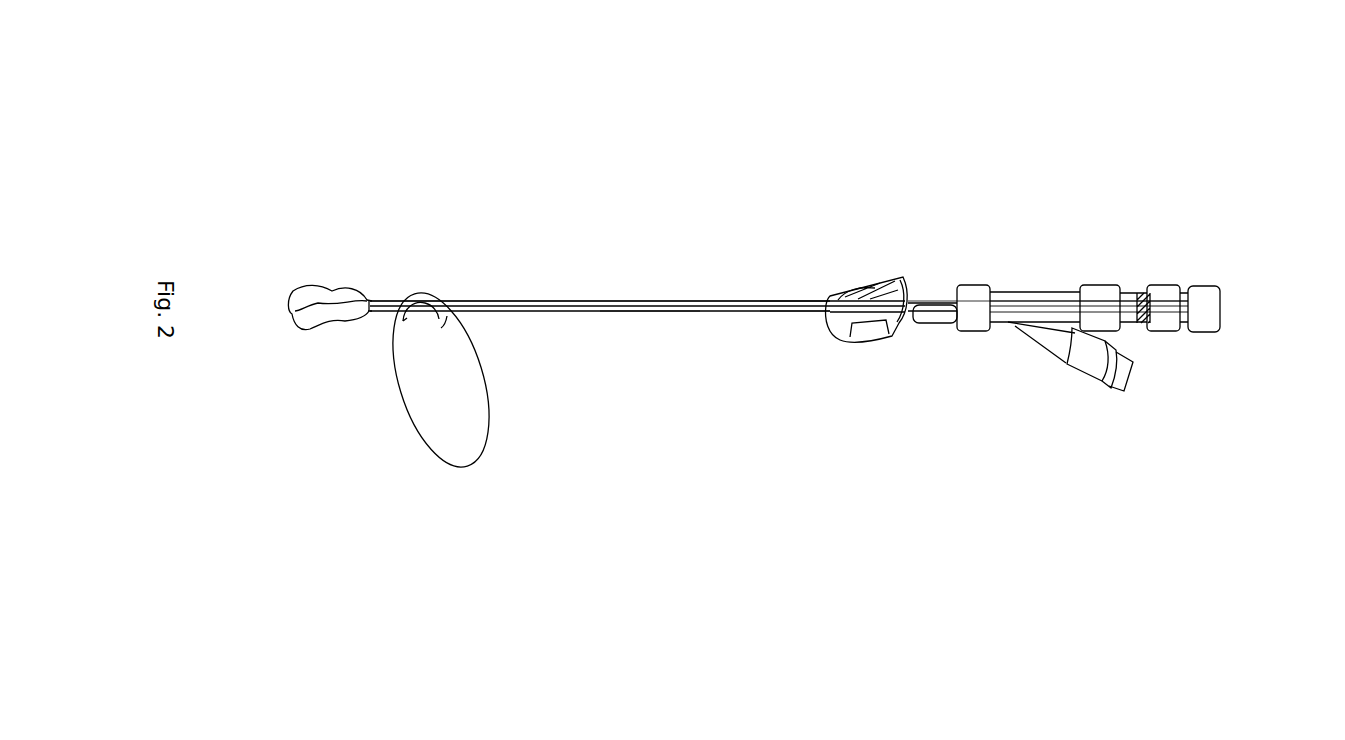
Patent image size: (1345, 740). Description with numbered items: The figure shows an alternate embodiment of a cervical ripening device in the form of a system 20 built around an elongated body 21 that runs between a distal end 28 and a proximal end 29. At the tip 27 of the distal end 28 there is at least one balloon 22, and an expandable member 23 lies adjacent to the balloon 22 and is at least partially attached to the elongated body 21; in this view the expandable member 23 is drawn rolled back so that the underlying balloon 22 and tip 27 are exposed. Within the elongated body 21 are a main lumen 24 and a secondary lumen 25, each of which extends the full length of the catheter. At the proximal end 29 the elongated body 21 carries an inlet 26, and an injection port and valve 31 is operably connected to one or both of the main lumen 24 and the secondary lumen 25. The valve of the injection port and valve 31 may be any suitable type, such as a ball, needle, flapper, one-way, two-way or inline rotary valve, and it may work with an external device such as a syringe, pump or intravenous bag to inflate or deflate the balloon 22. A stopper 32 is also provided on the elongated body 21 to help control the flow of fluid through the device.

The system 20 is at (767, 135).
The elongated body 21 is at (733, 290).
The balloon 22 is at (304, 331).
The expandable member 23 is at (437, 455).
The main lumen 24 is at (679, 312).
The secondary lumen 25 is at (797, 298).
The inlet 26 is at (1229, 328).
The tip 27 is at (368, 293).
The distal end 28 is at (291, 224).
The proximal end 29 is at (1230, 247).
The injection port and valve 31 is at (1100, 392).
The stopper 32 is at (880, 268).